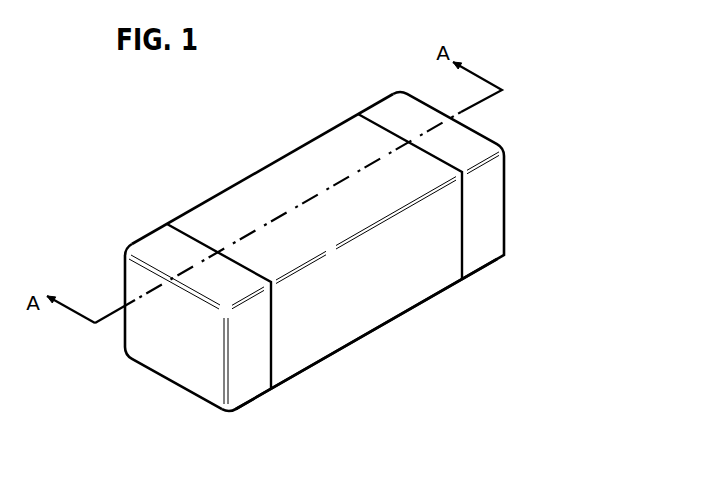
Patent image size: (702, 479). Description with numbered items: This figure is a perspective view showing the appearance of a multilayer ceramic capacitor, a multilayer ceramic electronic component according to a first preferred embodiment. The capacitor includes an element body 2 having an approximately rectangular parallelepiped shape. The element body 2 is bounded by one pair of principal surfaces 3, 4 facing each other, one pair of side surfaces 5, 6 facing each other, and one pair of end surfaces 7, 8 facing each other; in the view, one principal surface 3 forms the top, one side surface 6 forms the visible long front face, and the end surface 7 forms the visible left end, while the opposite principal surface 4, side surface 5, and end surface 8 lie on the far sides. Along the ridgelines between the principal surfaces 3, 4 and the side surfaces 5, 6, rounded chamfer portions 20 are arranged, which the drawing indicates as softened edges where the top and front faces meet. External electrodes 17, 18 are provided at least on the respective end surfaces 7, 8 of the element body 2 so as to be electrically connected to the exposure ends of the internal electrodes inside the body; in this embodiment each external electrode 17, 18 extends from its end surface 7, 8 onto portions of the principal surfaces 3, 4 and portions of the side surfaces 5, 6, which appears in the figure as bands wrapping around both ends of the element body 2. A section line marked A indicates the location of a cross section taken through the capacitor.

The element body 2 is at (293, 152).
The principal surface 3 is at (248, 188).
The principal surface 4 is at (300, 345).
The side surface 5 is at (215, 220).
The side surface 6 is at (363, 308).
The end surface 7 is at (183, 342).
The end surface 8 is at (486, 195).
The external electrode 17 is at (198, 387).
The external electrode 18 is at (502, 235).
The rounded chamfer portion 20 is at (367, 233).